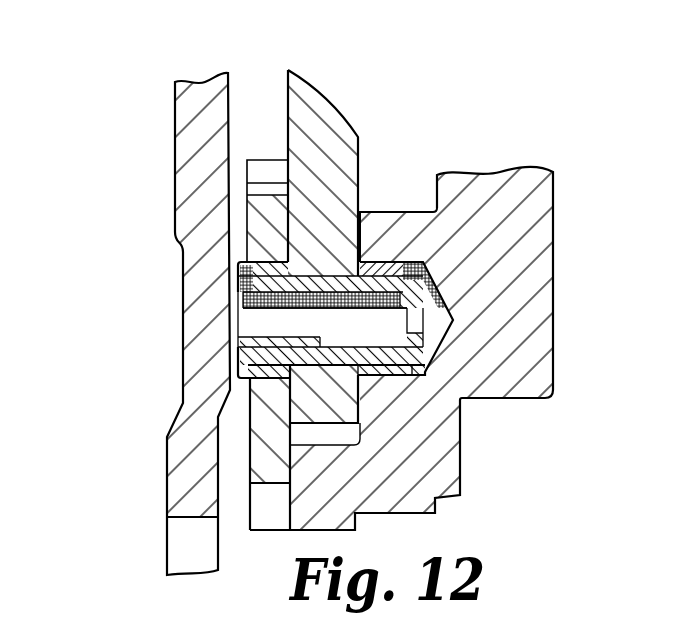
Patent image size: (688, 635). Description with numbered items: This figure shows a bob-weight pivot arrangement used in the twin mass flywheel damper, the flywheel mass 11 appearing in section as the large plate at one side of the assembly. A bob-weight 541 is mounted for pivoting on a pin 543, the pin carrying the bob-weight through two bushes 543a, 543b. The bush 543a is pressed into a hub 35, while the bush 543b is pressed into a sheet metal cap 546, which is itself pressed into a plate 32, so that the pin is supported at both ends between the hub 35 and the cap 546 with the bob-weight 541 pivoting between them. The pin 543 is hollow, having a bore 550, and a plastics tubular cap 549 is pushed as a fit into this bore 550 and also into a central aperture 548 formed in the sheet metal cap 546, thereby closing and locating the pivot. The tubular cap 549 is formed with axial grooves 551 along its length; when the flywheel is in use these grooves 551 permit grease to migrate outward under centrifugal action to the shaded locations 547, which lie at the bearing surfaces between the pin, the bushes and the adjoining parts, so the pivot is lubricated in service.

The flywheel mass 11 is at (190, 150).
The plate 32 is at (267, 455).
The hub 35 is at (437, 482).
The bob-weight 541 is at (327, 138).
The pin 543 is at (476, 398).
The bush 543a is at (462, 427).
The bush 543b is at (236, 262).
The sheet metal cap 546 is at (238, 352).
The grease locations 547 is at (241, 268).
The central aperture 548 is at (238, 310).
The plastics tubular cap 549 is at (240, 290).
The bore 550 is at (347, 346).
The axial grooves 551 is at (360, 213).